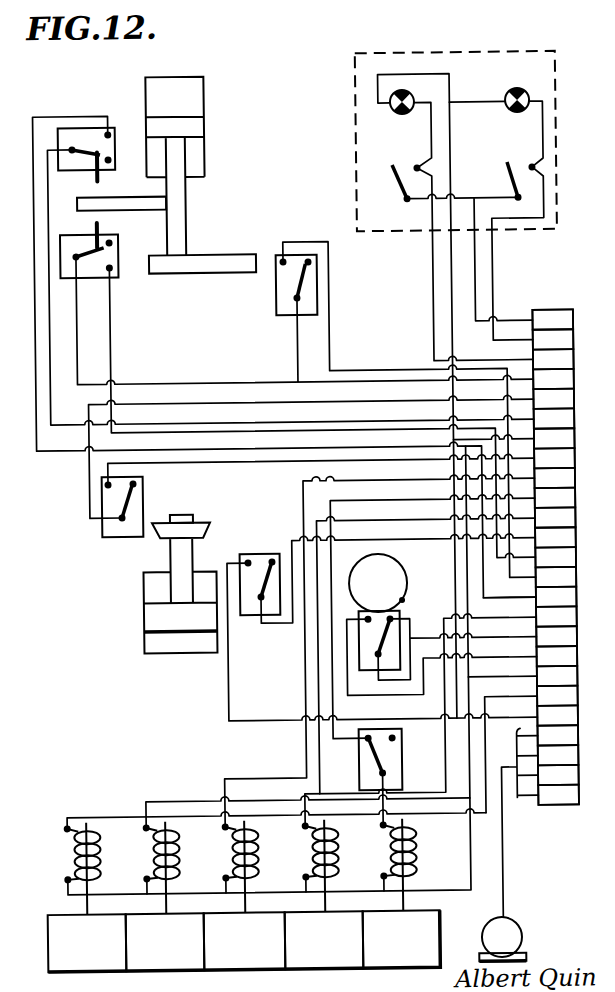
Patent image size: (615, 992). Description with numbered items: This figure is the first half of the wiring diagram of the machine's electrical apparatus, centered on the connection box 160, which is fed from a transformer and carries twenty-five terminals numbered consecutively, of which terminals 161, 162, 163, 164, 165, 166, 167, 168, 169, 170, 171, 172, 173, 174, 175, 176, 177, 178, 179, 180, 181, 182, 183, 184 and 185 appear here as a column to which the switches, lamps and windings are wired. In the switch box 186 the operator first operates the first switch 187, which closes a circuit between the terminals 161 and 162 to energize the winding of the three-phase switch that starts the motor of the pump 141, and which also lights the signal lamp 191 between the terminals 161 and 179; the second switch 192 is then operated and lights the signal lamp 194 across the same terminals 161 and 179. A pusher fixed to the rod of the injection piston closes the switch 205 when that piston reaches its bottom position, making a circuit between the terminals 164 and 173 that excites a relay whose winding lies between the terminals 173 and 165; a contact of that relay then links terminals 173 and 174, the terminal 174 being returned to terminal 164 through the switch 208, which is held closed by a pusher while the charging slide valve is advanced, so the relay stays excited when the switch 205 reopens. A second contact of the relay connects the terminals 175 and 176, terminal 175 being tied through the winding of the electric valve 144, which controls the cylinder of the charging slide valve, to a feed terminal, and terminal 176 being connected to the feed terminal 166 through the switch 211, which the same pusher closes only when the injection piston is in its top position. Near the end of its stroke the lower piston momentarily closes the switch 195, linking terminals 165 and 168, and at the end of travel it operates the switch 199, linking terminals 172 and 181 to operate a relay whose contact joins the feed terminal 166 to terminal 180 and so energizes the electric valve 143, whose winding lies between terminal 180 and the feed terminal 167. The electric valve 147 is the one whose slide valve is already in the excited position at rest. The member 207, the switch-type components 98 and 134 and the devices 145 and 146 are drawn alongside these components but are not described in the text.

The switch 211 is at (97, 125).
The actuating arm 207 is at (109, 198).
The switch 205 is at (87, 248).
The switch 208 is at (283, 302).
The switch box 186 is at (472, 56).
The signal lamp 194 is at (416, 111).
The signal lamp 191 is at (533, 97).
The second switch 192 is at (396, 181).
The first switch 187 is at (512, 187).
The connection box 160 is at (571, 312).
The terminal 161 is at (552, 319).
The terminal 162 is at (553, 339).
The terminal 163 is at (553, 359).
The terminal 164 is at (553, 379).
The feed terminal 165 is at (553, 399).
The feed terminal 166 is at (554, 418).
The feed terminal 167 is at (554, 438).
The terminal 168 is at (554, 458).
The terminal 169 is at (554, 478).
The terminal 170 is at (555, 498).
The terminal 171 is at (555, 517).
The terminal 172 is at (555, 537).
The terminal 173 is at (555, 557).
The terminal 174 is at (556, 577).
The terminal 175 is at (556, 597).
The terminal 176 is at (556, 616).
The terminal 177 is at (556, 636).
The terminal 178 is at (557, 656).
The terminal 179 is at (557, 676).
The terminal 180 is at (557, 696).
The terminal 181 is at (557, 715).
The terminal 182 is at (557, 735).
The terminal 183 is at (558, 755).
The terminal 184 is at (558, 775).
The terminal 185 is at (558, 795).
The switch 195 is at (113, 530).
The switch 199 is at (264, 554).
The relay switch 98 is at (392, 634).
The switch 134 is at (388, 766).
The electric valve 143 is at (87, 897).
The electric valve 144 is at (165, 896).
The solenoid valve 145 is at (244, 895).
The solenoid valve 146 is at (324, 894).
The electric valve 147 is at (401, 893).
The pump 141 is at (508, 933).